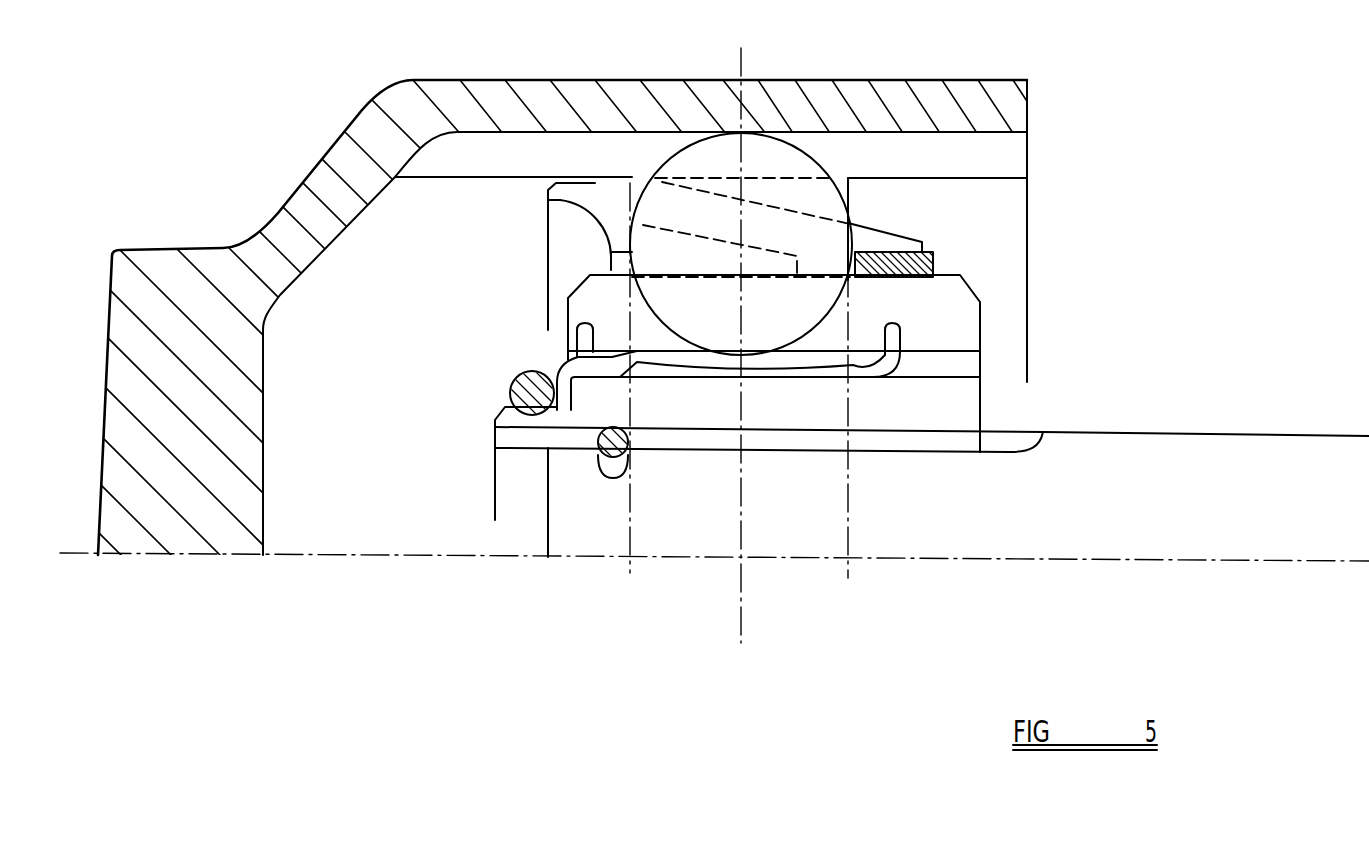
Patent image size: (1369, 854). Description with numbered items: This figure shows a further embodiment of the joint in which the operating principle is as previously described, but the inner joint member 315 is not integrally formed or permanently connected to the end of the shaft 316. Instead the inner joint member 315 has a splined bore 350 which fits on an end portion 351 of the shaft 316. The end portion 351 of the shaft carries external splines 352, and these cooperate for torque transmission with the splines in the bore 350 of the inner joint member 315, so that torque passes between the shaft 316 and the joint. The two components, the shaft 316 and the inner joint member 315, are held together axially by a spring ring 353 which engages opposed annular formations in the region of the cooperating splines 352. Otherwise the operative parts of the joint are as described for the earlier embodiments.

The inner joint member 315 is at (953, 402).
The shaft 316 is at (1265, 470).
The splined bore 350 is at (535, 438).
The end portion 351 is at (895, 530).
The external splines 352 is at (1003, 442).
The spring ring 353 is at (570, 428).